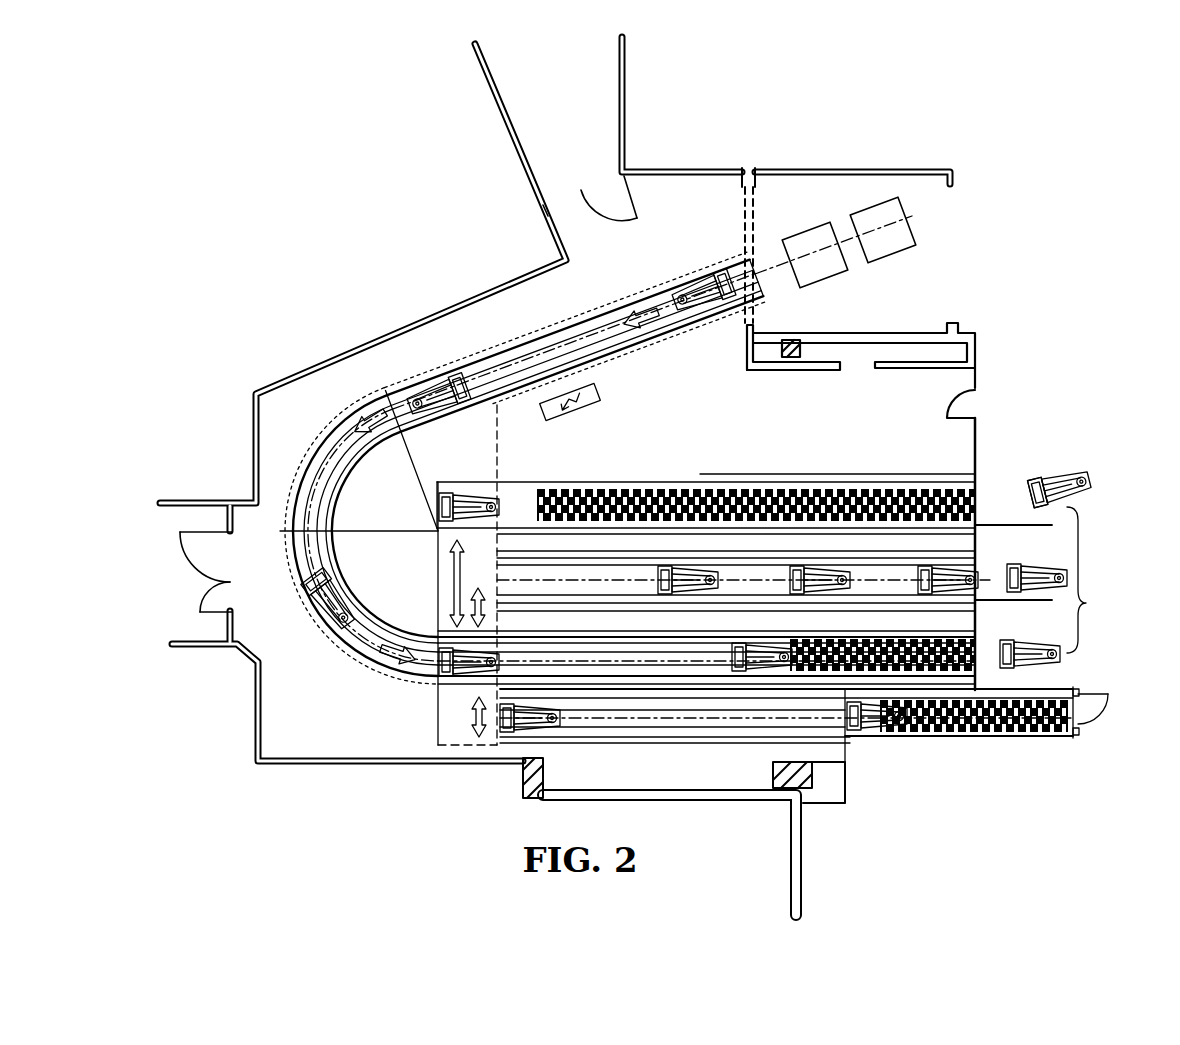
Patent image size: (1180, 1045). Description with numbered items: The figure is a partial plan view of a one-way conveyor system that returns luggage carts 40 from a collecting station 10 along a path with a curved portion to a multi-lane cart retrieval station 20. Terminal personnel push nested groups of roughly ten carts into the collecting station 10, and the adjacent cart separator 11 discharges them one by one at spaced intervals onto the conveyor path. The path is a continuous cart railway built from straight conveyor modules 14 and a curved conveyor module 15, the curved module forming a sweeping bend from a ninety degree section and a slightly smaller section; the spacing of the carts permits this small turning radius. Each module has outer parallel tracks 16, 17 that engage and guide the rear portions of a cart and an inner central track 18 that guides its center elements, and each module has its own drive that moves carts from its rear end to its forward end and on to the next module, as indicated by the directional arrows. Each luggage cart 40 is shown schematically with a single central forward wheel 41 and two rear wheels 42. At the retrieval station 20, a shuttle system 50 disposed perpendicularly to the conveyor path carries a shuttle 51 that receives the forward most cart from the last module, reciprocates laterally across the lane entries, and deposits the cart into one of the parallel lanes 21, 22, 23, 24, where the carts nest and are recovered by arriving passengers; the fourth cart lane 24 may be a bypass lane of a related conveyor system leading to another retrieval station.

The collecting station 10 is at (898, 247).
The cart separator 11 is at (827, 267).
The straight conveyor module 14 is at (576, 314).
The curved conveyor module 15 is at (363, 648).
The outer track 16 is at (692, 276).
The outer track 17 is at (663, 332).
The inner central track 18 is at (605, 332).
The cart retrieval station 20 is at (1004, 471).
The cart lane 21 is at (850, 487).
The cart lane 22 is at (760, 573).
The cart lane 23 is at (978, 633).
The fourth cart lane 24 is at (1010, 730).
The luggage cart 40 is at (1043, 658).
The forward wheel 41 is at (1090, 480).
The rear wheel 42 is at (1035, 478).
The shuttle system 50 is at (454, 714).
The shuttle 51 is at (457, 650).